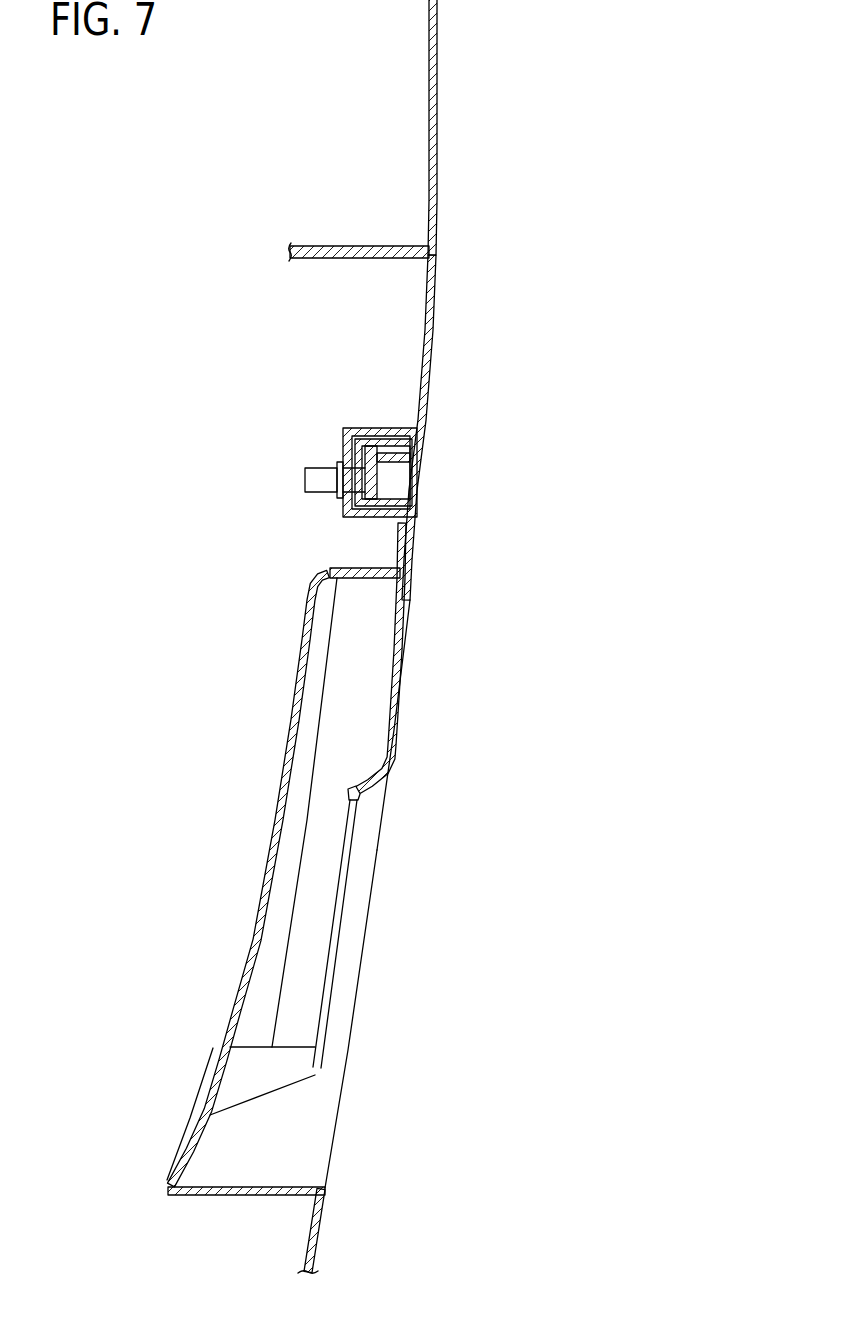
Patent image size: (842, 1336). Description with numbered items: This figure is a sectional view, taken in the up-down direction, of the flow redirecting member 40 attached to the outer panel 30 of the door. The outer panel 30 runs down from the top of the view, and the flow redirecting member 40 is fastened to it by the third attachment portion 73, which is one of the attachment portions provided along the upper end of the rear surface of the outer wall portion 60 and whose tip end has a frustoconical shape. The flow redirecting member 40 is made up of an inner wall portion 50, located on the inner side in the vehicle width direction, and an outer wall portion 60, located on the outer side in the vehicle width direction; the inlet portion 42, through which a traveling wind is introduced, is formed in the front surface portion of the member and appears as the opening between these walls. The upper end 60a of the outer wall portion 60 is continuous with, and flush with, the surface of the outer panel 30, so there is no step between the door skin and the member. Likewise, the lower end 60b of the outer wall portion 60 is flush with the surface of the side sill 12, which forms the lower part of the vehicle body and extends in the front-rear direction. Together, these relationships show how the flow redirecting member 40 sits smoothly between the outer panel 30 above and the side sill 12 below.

The outer panel 30 is at (437, 104).
The upper end of the outer wall portion 60a is at (433, 315).
The outer wall portion 60 is at (372, 800).
The lower end of the outer wall portion 60b is at (338, 1128).
The side sill 12 is at (318, 1235).
The third attachment portion 73 is at (323, 442).
The flow redirecting member 40 is at (421, 746).
The inlet portion 42 is at (368, 637).
The inner wall portion 50 is at (268, 855).